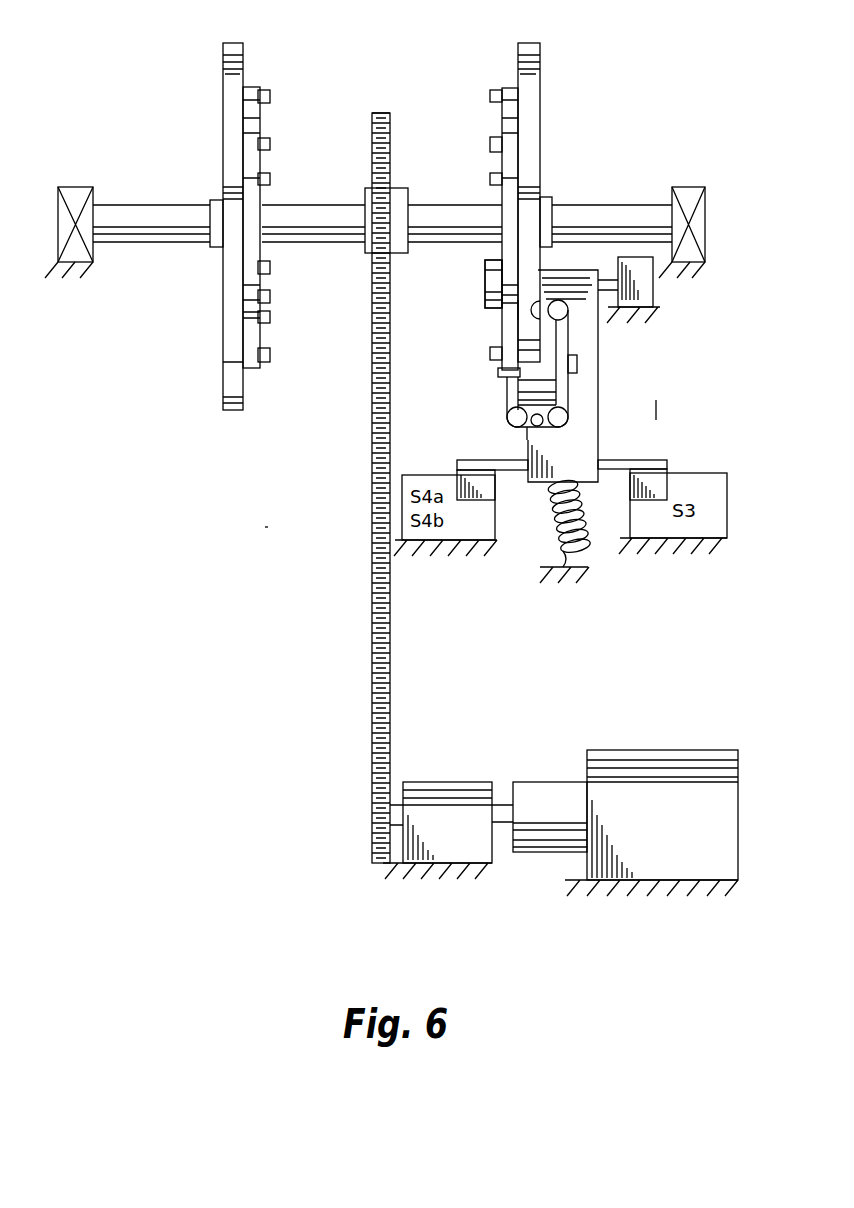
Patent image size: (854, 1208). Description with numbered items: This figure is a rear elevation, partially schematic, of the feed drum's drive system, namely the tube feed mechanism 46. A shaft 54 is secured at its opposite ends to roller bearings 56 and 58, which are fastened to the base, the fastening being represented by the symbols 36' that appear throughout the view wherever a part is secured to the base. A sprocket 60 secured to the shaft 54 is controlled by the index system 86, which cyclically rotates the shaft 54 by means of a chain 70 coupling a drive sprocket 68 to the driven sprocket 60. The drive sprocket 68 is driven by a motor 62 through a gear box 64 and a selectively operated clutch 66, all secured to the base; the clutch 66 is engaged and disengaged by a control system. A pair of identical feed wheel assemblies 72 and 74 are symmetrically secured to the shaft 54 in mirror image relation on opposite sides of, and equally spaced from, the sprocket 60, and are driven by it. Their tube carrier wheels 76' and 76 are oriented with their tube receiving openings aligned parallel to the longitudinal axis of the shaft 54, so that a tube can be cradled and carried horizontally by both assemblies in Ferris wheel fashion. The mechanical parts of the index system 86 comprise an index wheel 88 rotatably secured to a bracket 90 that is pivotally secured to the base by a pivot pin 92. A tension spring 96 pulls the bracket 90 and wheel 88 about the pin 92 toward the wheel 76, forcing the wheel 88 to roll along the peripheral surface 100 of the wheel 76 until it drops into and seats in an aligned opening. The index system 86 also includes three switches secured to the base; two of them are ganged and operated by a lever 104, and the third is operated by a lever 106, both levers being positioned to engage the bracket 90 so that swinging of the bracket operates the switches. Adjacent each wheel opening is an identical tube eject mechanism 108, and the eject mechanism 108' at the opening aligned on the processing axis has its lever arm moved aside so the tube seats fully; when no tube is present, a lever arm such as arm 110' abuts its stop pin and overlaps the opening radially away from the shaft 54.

The base symbol 36' is at (391, 603).
The tube feed mechanism 46 is at (268, 527).
The shaft 54 is at (611, 215).
The roller bearing 56 is at (691, 194).
The roller bearing 58 is at (78, 195).
The sprocket 60 is at (389, 166).
The motor 62 is at (648, 750).
The gear box 64 is at (546, 782).
The clutch 66 is at (448, 782).
The drive sprocket 68 is at (374, 820).
The chain 70 is at (372, 628).
The feed wheel assembly 72 is at (262, 77).
The feed wheel assembly 74 is at (557, 80).
The tube carrier wheel 76 is at (553, 215).
The tube carrier wheel 76' is at (217, 227).
The index system 86 is at (652, 409).
The index wheel 88 is at (551, 348).
The bracket 90 is at (590, 411).
The pivot pin 92 is at (613, 276).
The tension spring 96 is at (550, 529).
The peripheral surface 100 is at (534, 180).
The lever 104 is at (480, 460).
The lever 106 is at (654, 460).
The tube eject mechanism 108 is at (380, 226).
The eject mechanism 108' is at (469, 203).
The lever arm 110' is at (469, 273).